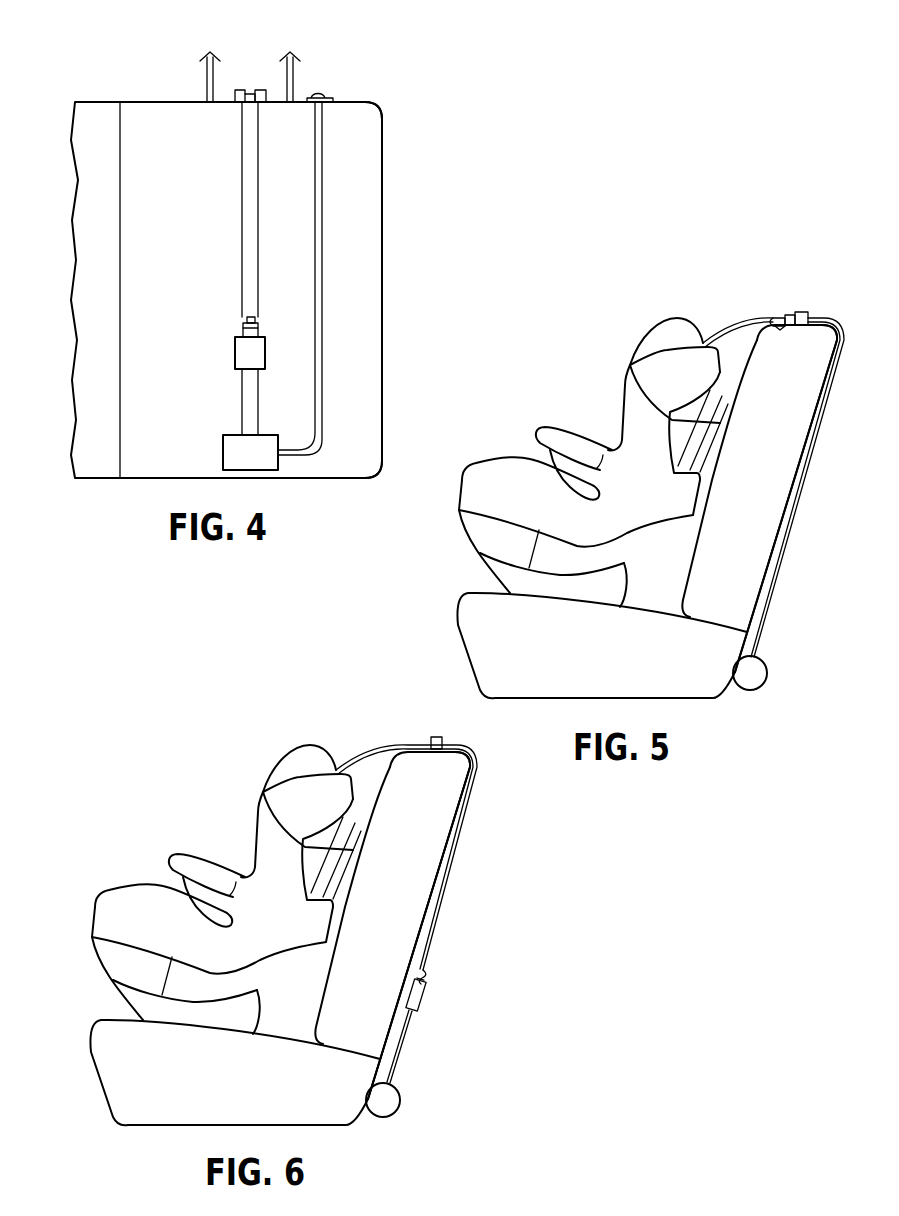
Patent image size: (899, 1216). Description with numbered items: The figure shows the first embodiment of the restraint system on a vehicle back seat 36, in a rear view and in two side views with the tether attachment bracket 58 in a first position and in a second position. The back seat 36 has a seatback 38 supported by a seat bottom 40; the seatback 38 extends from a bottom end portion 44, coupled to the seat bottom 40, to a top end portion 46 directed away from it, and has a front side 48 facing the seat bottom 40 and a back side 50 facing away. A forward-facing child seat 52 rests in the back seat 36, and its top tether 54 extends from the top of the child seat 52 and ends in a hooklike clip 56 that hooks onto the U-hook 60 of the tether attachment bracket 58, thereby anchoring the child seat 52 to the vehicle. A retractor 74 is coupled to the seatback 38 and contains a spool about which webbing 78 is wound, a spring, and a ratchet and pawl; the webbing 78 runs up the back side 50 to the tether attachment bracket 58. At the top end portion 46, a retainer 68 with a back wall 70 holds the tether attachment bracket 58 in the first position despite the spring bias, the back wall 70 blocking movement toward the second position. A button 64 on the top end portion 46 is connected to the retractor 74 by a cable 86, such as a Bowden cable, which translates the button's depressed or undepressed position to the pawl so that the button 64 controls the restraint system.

In FIG. 4, the back seat 36 is at (382, 290).
In FIG. 5, the back seat 36 is at (556, 700).
In FIG. 6, the back seat 36 is at (157, 1128).
In FIG. 4, the seatback 38 is at (382, 197).
In FIG. 5, the seatback 38 is at (770, 468).
In FIG. 6, the seatback 38 is at (430, 925).
In FIG. 5, the seat bottom 40 is at (616, 506).
In FIG. 6, the seat bottom 40 is at (286, 963).
In FIG. 4, the bottom end portion 44 is at (382, 455).
In FIG. 5, the bottom end portion 44 is at (757, 608).
In FIG. 6, the bottom end portion 44 is at (390, 1050).
In FIG. 4, the top end portion 46 is at (382, 114).
In FIG. 5, the top end portion 46 is at (826, 322).
In FIG. 6, the top end portion 46 is at (470, 763).
In FIG. 5, the front side 48 is at (630, 365).
In FIG. 6, the front side 48 is at (263, 792).
In FIG. 4, the back side 50 is at (182, 279).
In FIG. 5, the back side 50 is at (813, 437).
In FIG. 6, the back side 50 is at (462, 827).
In FIG. 5, the child seat 52 is at (593, 462).
In FIG. 6, the child seat 52 is at (226, 889).
In FIG. 4, the top tether 54 is at (208, 209).
In FIG. 5, the top tether 54 is at (729, 322).
In FIG. 6, the top tether 54 is at (363, 745).
In FIG. 4, the clip 56 is at (243, 325).
In FIG. 5, the clip 56 is at (774, 316).
In FIG. 6, the clip 56 is at (427, 972).
In FIG. 4, the tether attachment bracket 58 is at (235, 348).
In FIG. 5, the tether attachment bracket 58 is at (789, 312).
In FIG. 6, the tether attachment bracket 58 is at (428, 1000).
In FIG. 4, the U-hook 60 is at (260, 330).
In FIG. 5, the U-hook 60 is at (780, 327).
In FIG. 6, the U-hook 60 is at (430, 982).
In FIG. 4, the button 64 is at (317, 92).
In FIG. 4, the retainer 68 is at (259, 90).
In FIG. 5, the retainer 68 is at (803, 310).
In FIG. 6, the retainer 68 is at (437, 737).
In FIG. 4, the back wall 70 is at (235, 96).
In FIG. 4, the retractor 74 is at (223, 452).
In FIG. 5, the retractor 74 is at (767, 672).
In FIG. 6, the retractor 74 is at (404, 1100).
In FIG. 4, the webbing 78 is at (260, 402).
In FIG. 5, the webbing 78 is at (797, 530).
In FIG. 6, the webbing 78 is at (412, 1025).
In FIG. 4, the cable 86 is at (322, 338).